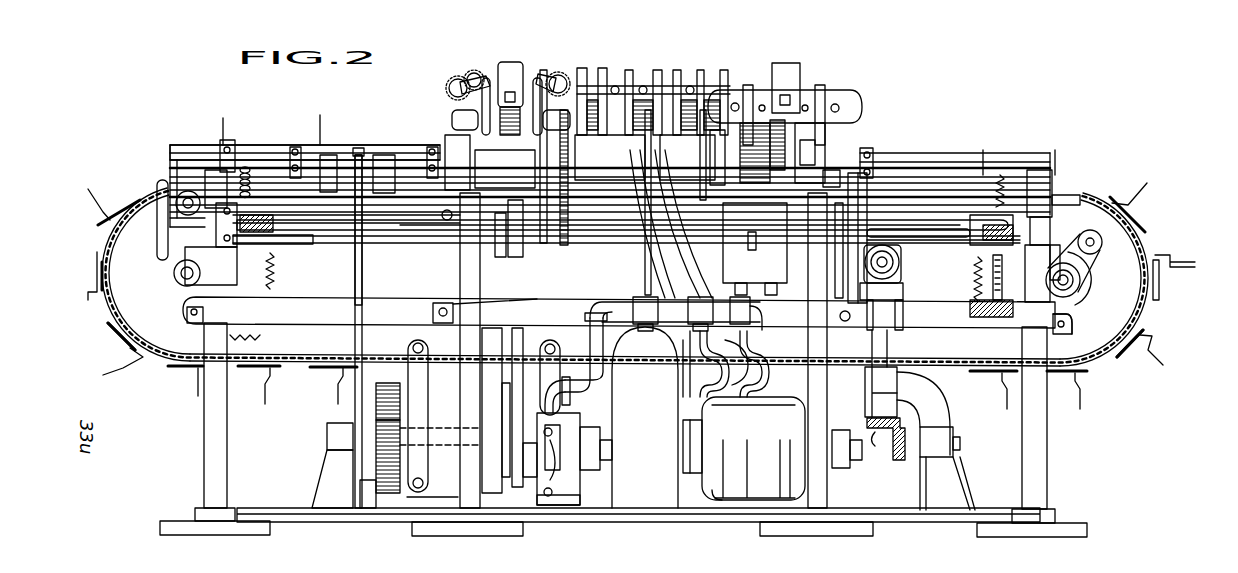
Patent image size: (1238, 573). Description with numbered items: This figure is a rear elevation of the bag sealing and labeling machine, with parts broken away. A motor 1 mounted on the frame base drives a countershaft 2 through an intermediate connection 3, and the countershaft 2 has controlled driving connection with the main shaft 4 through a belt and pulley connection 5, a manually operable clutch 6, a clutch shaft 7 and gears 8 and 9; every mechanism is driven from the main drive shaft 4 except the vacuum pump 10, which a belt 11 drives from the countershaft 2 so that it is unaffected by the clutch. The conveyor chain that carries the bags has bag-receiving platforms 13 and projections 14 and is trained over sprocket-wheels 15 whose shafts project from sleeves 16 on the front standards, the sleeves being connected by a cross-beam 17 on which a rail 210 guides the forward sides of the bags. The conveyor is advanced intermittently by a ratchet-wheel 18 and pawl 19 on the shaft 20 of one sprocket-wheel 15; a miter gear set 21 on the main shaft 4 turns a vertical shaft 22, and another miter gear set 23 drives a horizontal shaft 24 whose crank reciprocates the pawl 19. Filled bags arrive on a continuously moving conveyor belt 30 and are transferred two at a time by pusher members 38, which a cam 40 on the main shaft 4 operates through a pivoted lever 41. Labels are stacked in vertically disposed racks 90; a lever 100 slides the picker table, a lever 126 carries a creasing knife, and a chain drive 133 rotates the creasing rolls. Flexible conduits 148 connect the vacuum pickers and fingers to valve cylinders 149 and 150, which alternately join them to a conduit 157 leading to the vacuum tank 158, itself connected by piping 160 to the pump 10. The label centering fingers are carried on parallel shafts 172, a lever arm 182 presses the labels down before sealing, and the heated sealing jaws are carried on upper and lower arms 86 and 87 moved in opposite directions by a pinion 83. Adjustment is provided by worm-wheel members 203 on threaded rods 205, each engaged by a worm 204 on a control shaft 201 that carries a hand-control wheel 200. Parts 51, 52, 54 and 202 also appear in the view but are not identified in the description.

The motor 1 is at (735, 500).
The countershaft 2 is at (625, 231).
The intermediate connection 3 is at (845, 470).
The main drive shaft 4 is at (327, 437).
The belt and pulley connection 5 is at (498, 494).
The manually operable clutch 6 is at (525, 420).
The clutch shaft 7 is at (430, 430).
The gear 8 is at (390, 383).
The gear 9 is at (387, 494).
The vacuum pump 10 is at (560, 504).
The belt 11 is at (524, 258).
The bag-receiving platforms 13 is at (1161, 290).
The projections 14 is at (1181, 265).
The sprocket-wheels 15 is at (1100, 348).
The sleeves 16 is at (190, 299).
The cross-beam 17 is at (315, 226).
The ratchet-wheel 18 is at (1082, 302).
The pawl 19 is at (1075, 230).
The shaft 20 is at (176, 279).
The miter gear set 21 is at (905, 415).
The vertical shaft 22 is at (885, 366).
The miter gear set 23 is at (901, 281).
The horizontal shaft 24 is at (900, 264).
The conveyor belt 30 is at (322, 245).
The pusher members 38 is at (330, 155).
The cam 40 is at (367, 497).
The pivoted lever 41 is at (356, 280).
The gear 51 is at (458, 80).
The plate 52 is at (570, 78).
The gear 54 is at (470, 74).
The pinion 83 is at (768, 143).
The upper arm 86 is at (785, 95).
The lower arm 87 is at (808, 152).
The racks 90 is at (645, 78).
The lever 100 is at (700, 297).
The lever 126 is at (678, 215).
The chain drive 133 is at (566, 246).
The flexible conduits 148 is at (700, 388).
The cylinder 149 is at (748, 365).
The cylinder 150 is at (700, 368).
The conduit 157 is at (700, 340).
The vacuum tank 158 is at (648, 505).
The piping 160 is at (598, 365).
The parallel shafts 172 is at (735, 103).
The lever arm 182 is at (750, 85).
The hand-control wheel 200 is at (160, 180).
The control shaft 201 is at (407, 231).
The block 202 is at (216, 237).
The worm-wheel members 203 is at (980, 246).
The worm 204 is at (272, 253).
The threaded rods 205 is at (255, 168).
The rail 210 is at (205, 146).